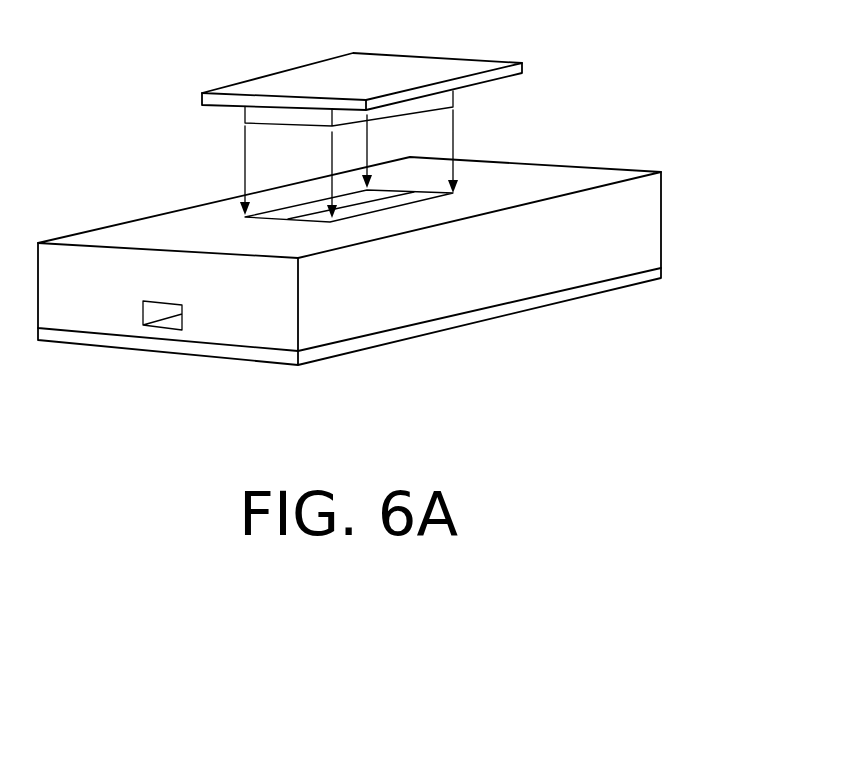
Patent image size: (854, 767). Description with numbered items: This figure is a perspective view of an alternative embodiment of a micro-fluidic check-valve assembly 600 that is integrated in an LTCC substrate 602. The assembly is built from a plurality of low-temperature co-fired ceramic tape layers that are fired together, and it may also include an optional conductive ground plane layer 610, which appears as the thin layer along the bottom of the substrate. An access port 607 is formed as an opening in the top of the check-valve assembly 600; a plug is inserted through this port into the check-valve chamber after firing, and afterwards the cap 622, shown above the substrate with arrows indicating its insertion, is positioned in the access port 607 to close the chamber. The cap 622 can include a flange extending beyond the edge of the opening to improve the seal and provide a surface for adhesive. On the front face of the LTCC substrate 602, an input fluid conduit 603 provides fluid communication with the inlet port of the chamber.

The check-valve assembly 600 is at (153, 188).
The LTCC substrate 602 is at (550, 272).
The input fluid conduit 603 is at (165, 320).
The access port 607 is at (305, 208).
The conductive ground plane layer 610 is at (467, 325).
The cap 622 is at (413, 58).